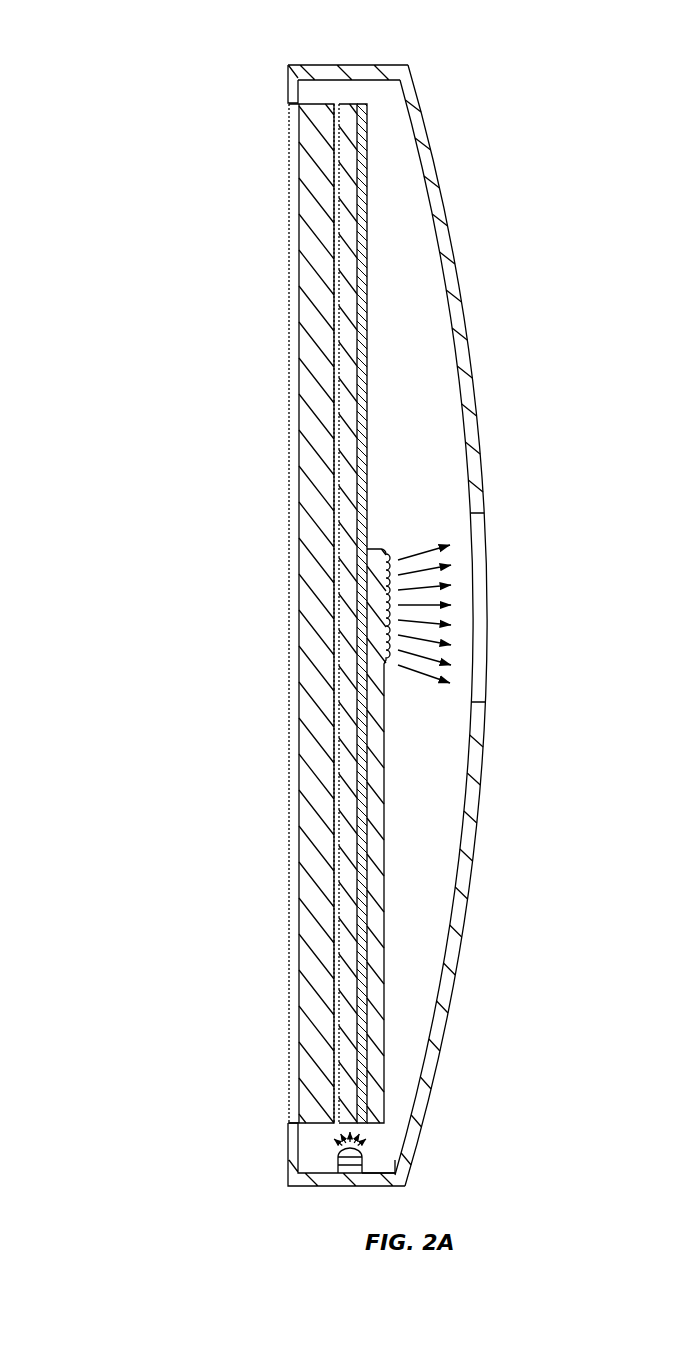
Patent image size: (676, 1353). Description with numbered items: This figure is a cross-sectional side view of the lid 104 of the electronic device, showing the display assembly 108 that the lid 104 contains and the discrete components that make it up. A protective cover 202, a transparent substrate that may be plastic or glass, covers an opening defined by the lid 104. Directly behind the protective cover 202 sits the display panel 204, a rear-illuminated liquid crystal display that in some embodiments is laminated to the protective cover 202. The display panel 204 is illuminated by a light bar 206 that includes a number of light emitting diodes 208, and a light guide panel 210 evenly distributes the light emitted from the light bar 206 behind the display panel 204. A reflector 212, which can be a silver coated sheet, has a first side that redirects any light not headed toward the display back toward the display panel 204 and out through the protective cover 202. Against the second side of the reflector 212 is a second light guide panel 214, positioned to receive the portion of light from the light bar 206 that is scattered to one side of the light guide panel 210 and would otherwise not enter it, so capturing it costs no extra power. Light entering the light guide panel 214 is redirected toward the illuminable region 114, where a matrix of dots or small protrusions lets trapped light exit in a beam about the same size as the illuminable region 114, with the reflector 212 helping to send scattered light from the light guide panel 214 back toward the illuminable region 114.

The lid 104 is at (120, 77).
The display assembly 108 is at (262, 810).
The illuminable region 114 is at (485, 535).
The protective cover 202 is at (290, 488).
The display panel 204 is at (299, 390).
The light bar 206 is at (322, 1158).
The light emitting diodes 208 is at (378, 1160).
The light guide panel 210 is at (340, 303).
The reflector 212 is at (362, 228).
The light guide panel 214 is at (374, 548).